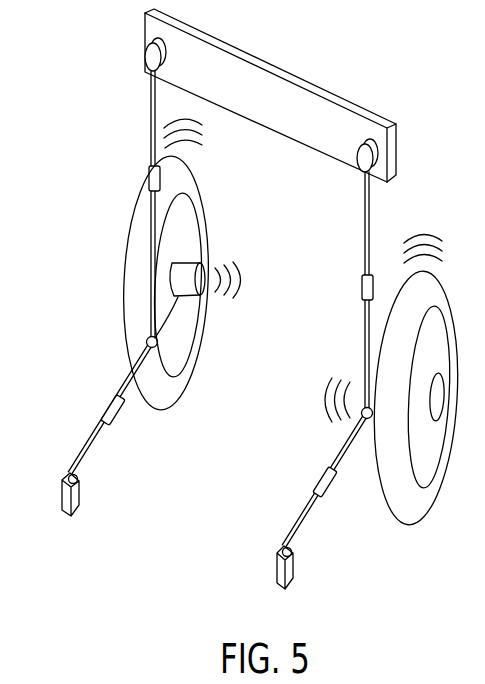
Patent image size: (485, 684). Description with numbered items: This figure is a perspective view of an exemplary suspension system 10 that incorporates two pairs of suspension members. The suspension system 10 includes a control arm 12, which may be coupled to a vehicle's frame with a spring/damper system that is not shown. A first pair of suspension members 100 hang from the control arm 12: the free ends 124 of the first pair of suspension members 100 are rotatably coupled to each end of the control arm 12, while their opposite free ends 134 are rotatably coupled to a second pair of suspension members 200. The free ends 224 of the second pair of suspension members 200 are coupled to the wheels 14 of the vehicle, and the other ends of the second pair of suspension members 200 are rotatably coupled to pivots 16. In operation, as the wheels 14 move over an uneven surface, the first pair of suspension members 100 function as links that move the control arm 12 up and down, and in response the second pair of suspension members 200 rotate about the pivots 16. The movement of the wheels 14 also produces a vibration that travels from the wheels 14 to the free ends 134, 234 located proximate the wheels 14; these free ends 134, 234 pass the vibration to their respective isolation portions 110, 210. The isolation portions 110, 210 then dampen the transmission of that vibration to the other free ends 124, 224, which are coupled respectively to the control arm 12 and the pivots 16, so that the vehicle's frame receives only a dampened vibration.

The suspension system 10 is at (333, 55).
The control arm 12 is at (247, 30).
The wheels 14 is at (135, 210).
The pivots 16 is at (62, 496).
The first pair of suspension members 100 is at (134, 44).
The isolation portion 110 is at (150, 168).
The free end 124 is at (153, 73).
The free end 134 is at (148, 337).
The second pair of suspension members 200 is at (104, 362).
The isolation portion 210 is at (117, 418).
The free end 224 is at (78, 480).
The free end 234 is at (157, 348).